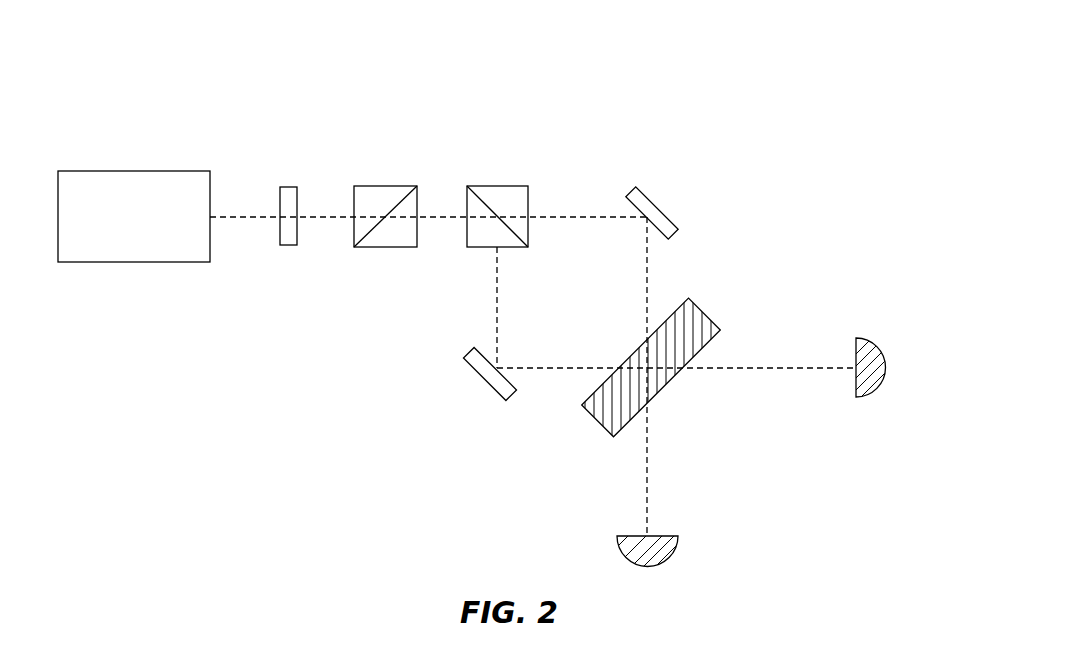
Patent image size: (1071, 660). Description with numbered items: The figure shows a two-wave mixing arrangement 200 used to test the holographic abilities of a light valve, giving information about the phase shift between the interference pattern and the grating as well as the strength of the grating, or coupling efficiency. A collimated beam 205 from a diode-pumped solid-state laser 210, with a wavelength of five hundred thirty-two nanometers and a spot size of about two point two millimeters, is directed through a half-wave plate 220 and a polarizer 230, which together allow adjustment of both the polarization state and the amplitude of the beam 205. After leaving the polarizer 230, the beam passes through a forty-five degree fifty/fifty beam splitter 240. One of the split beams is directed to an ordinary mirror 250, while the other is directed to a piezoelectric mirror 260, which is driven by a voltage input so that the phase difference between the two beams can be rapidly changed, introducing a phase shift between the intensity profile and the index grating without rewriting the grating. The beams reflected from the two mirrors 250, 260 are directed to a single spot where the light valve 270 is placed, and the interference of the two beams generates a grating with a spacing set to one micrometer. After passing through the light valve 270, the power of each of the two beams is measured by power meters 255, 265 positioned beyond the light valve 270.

The two-wave mixing arrangement 200 is at (251, 58).
The collimated beam 205 is at (230, 217).
The diode-pumped solid-state laser 210 is at (163, 171).
The half-wave plate 220 is at (288, 187).
The polarizer 230 is at (383, 186).
The beam splitter 240 is at (497, 186).
The ordinary mirror 250 is at (660, 205).
The power meter 255 is at (680, 545).
The piezoelectric mirror 260 is at (487, 381).
The power meter 265 is at (888, 368).
The light valve 270 is at (708, 317).